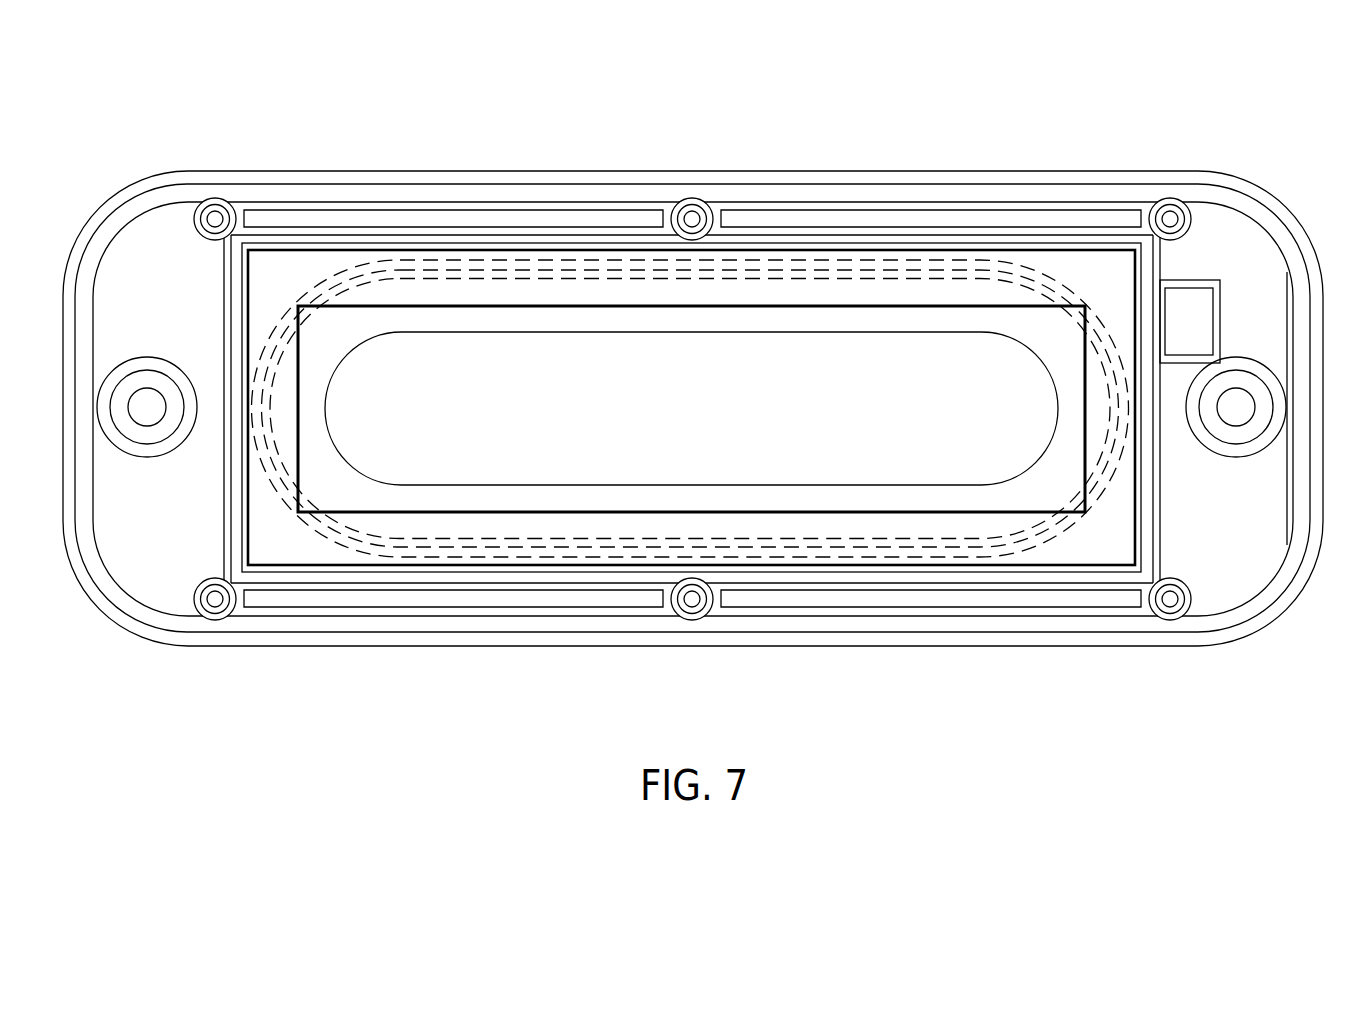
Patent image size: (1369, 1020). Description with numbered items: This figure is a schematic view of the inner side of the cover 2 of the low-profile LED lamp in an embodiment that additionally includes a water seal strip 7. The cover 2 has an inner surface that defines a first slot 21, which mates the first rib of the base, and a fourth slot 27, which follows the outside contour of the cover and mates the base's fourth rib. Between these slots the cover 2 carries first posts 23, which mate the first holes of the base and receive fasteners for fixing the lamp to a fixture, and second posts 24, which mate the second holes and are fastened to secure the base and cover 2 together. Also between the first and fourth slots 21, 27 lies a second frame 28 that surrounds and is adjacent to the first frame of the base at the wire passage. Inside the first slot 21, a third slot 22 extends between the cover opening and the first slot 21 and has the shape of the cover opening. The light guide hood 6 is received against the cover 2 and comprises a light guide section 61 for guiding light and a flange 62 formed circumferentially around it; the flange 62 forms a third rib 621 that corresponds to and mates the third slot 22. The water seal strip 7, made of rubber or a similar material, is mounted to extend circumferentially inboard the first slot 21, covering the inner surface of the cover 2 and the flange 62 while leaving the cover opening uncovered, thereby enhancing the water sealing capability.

The cover 2 is at (193, 166).
The light guide hood 6 is at (398, 81).
The light guide section 61 is at (368, 338).
The flange 62 is at (291, 298).
The water seal strip 7 is at (470, 307).
The first slot 21 is at (792, 243).
The third slot 22 is at (958, 278).
The third rib 621 is at (690, 408).
The first post 23 is at (147, 357).
The second post 24 is at (692, 620).
The fourth slot 27 is at (895, 200).
The second frame 28 is at (1215, 322).